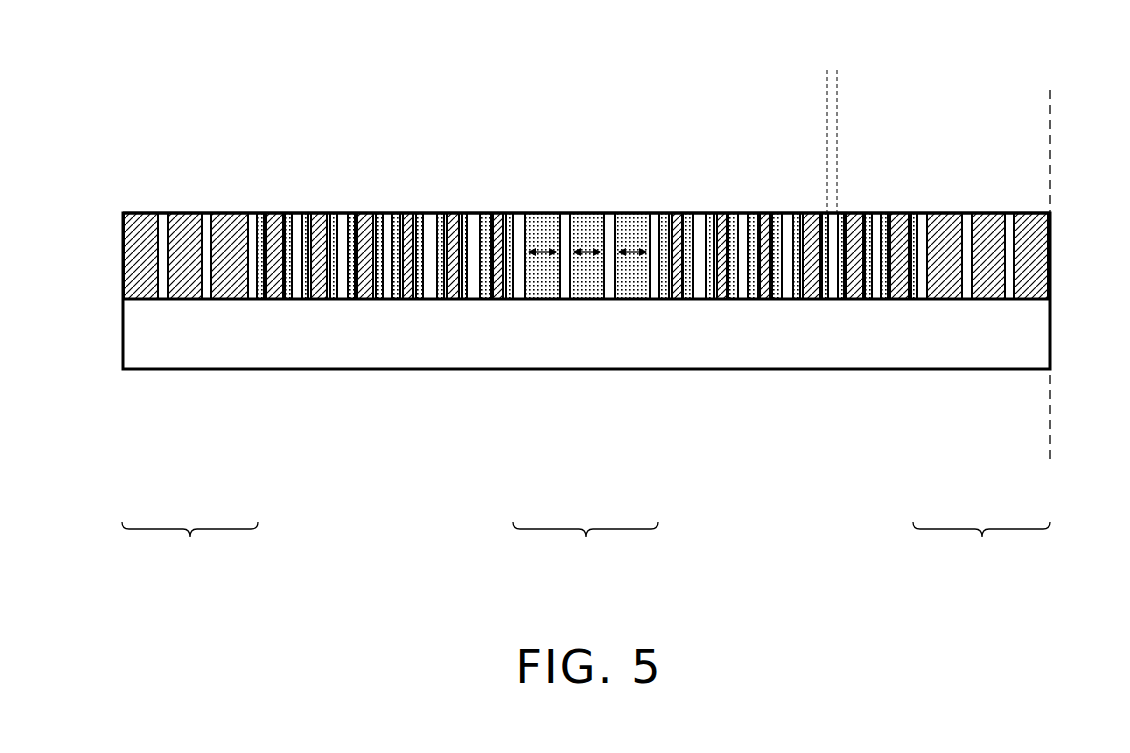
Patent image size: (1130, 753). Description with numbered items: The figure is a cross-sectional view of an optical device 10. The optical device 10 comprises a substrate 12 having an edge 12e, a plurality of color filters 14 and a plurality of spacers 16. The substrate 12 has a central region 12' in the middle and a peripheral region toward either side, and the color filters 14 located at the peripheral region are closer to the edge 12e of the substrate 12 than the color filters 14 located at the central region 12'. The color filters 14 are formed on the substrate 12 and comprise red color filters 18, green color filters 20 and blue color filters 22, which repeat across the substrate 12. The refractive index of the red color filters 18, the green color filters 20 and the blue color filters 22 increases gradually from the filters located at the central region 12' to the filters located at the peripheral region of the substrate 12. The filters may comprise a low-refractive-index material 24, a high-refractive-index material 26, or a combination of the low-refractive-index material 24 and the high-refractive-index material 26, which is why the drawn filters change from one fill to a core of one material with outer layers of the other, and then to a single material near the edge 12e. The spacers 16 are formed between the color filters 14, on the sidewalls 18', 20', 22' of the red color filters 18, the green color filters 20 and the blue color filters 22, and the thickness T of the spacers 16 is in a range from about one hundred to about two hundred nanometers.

The optical device 10 is at (33, 63).
The substrate 12 is at (616, 334).
The central region 12' is at (585, 549).
The edge 12e is at (1052, 292).
The color filters 14 is at (1057, 213).
The spacers 16 is at (163, 299).
The red color filters 18 is at (543, 209).
The sidewall of red color filter 18' is at (529, 163).
The green color filters 20 is at (586, 209).
The sidewall of green color filter 20' is at (573, 146).
The blue color filters 22 is at (629, 209).
The sidewall of blue color filter 22' is at (619, 163).
The low-refractive-index material 24 is at (319, 299).
The high-refractive-index material 26 is at (147, 299).
The thickness of the spacers T is at (878, 80).